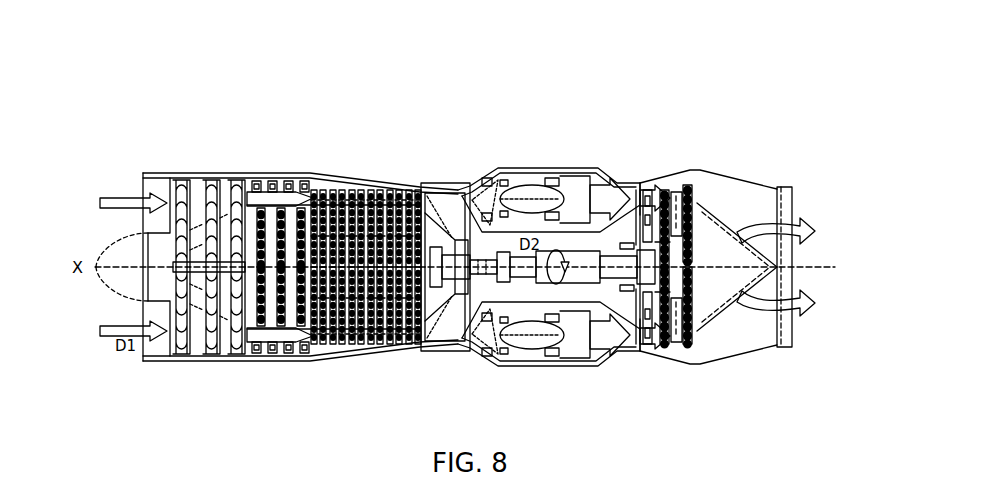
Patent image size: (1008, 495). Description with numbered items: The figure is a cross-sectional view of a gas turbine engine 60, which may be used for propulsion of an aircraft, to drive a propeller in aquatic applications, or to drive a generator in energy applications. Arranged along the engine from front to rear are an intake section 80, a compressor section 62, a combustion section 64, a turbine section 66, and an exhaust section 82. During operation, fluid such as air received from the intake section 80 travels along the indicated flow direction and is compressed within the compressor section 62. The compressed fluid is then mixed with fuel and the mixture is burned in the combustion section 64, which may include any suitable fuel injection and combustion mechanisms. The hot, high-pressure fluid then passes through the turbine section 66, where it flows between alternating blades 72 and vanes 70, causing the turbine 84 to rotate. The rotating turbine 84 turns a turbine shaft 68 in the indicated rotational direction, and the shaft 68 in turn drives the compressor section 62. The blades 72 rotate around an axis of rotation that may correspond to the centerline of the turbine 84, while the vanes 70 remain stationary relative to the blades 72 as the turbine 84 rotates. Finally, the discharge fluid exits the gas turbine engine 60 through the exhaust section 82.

The gas turbine engine 60 is at (352, 152).
The compressor section 62 is at (229, 170).
The combustion section 64 is at (562, 163).
The turbine section 66 is at (669, 163).
The turbine shaft 68 is at (578, 265).
The vanes 70 is at (677, 342).
The blades 72 is at (690, 207).
The intake section 80 is at (128, 188).
The exhaust section 82 is at (815, 217).
The turbine 84 is at (657, 255).